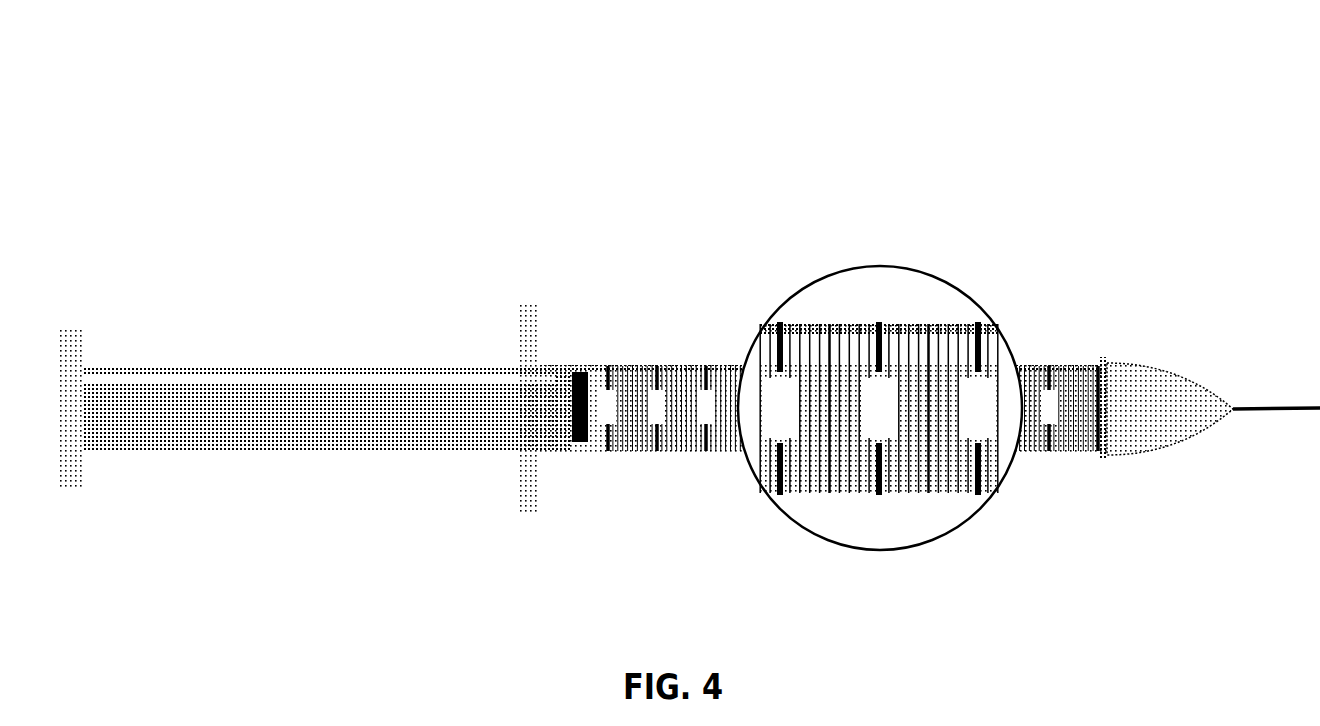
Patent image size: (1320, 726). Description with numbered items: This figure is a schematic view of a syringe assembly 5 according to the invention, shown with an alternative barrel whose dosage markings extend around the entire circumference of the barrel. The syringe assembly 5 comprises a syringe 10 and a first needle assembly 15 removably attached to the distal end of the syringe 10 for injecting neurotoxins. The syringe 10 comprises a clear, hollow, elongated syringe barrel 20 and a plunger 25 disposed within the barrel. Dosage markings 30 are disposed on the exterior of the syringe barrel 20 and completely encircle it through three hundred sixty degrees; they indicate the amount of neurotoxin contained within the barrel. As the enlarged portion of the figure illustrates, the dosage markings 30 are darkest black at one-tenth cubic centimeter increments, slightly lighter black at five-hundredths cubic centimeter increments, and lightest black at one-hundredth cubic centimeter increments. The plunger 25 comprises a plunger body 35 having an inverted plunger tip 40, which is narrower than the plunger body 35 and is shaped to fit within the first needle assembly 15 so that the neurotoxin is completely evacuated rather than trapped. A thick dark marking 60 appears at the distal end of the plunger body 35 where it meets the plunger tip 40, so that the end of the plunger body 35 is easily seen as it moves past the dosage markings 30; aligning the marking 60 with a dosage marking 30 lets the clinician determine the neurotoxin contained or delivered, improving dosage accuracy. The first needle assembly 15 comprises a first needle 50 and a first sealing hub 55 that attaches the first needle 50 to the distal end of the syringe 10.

The syringe assembly 5 is at (1193, 107).
The syringe 10 is at (622, 230).
The first needle assembly 15 is at (1203, 342).
The syringe barrel 20 is at (880, 534).
The plunger 25 is at (462, 497).
The dosage markings 30 is at (842, 321).
The plunger body 35 is at (562, 376).
The inverted plunger tip 40 is at (635, 424).
The first needle 50 is at (1258, 415).
The first sealing hub 55 is at (1137, 442).
The marking 60 is at (578, 454).